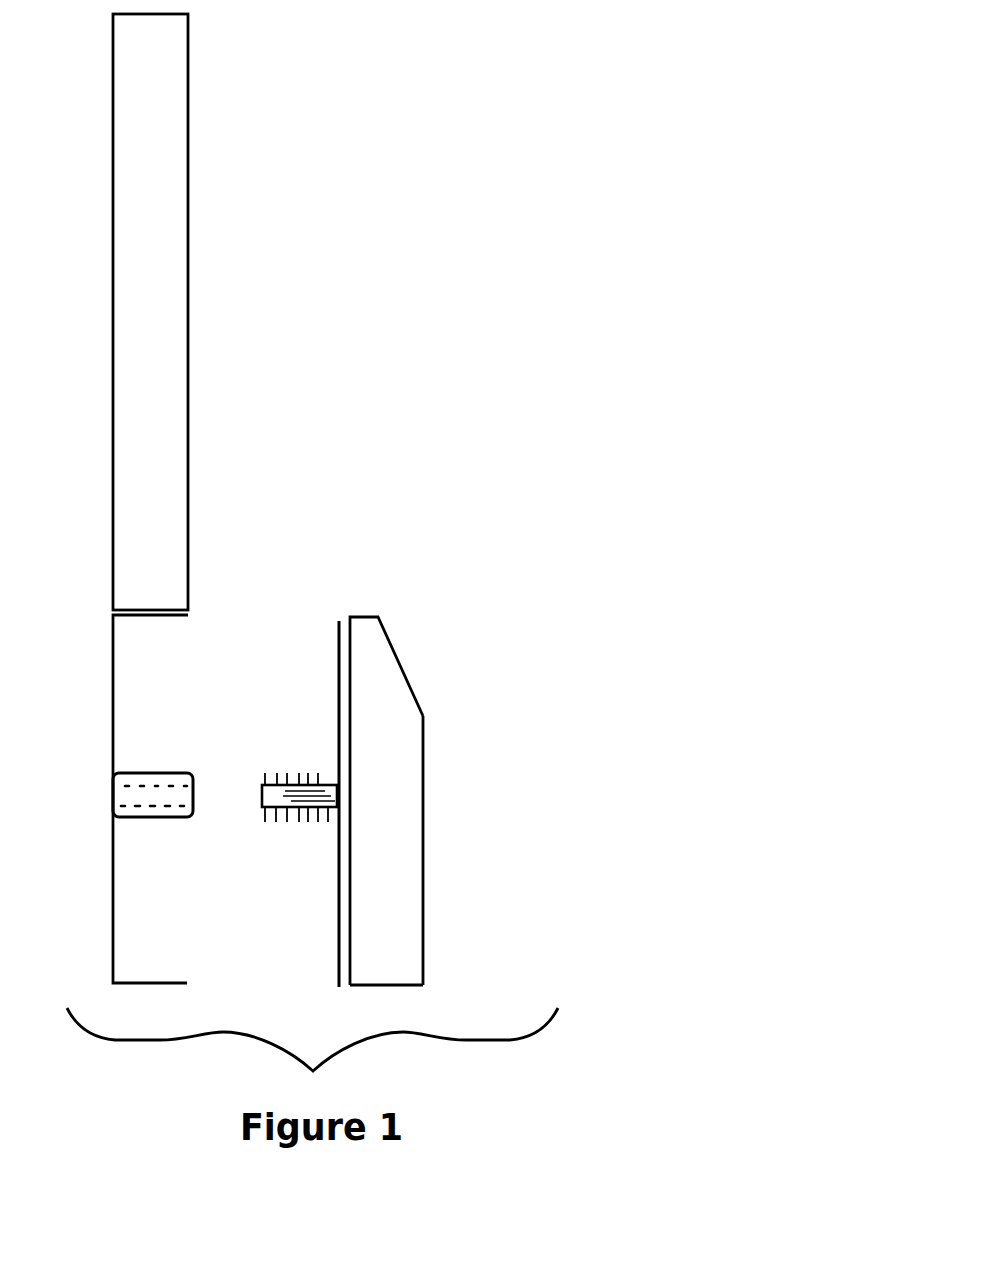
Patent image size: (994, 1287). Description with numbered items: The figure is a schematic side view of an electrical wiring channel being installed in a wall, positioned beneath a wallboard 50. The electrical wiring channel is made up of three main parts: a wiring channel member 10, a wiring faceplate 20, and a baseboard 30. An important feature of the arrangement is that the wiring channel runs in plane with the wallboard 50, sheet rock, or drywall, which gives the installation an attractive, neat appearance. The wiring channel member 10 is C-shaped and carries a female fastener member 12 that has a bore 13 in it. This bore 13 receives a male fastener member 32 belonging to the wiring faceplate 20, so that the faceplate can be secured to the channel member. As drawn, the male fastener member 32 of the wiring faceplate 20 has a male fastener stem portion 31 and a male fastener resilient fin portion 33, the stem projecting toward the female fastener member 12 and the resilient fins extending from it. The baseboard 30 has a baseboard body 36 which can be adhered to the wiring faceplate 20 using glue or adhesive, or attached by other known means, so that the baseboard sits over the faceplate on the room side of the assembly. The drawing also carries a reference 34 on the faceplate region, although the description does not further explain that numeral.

The wiring channel member 10 is at (148, 690).
The female fastener member 12 is at (157, 790).
The bore 13 is at (151, 808).
The wiring faceplate 20 is at (550, 761).
The baseboard 30 is at (597, 801).
The male fastener stem portion 31 is at (275, 826).
The male fastener member 32 is at (287, 830).
The male fastener resilient fin portion 33 is at (290, 765).
The faceplate edge 34 is at (337, 667).
The baseboard body 36 is at (410, 920).
The wallboard 50 is at (226, 264).